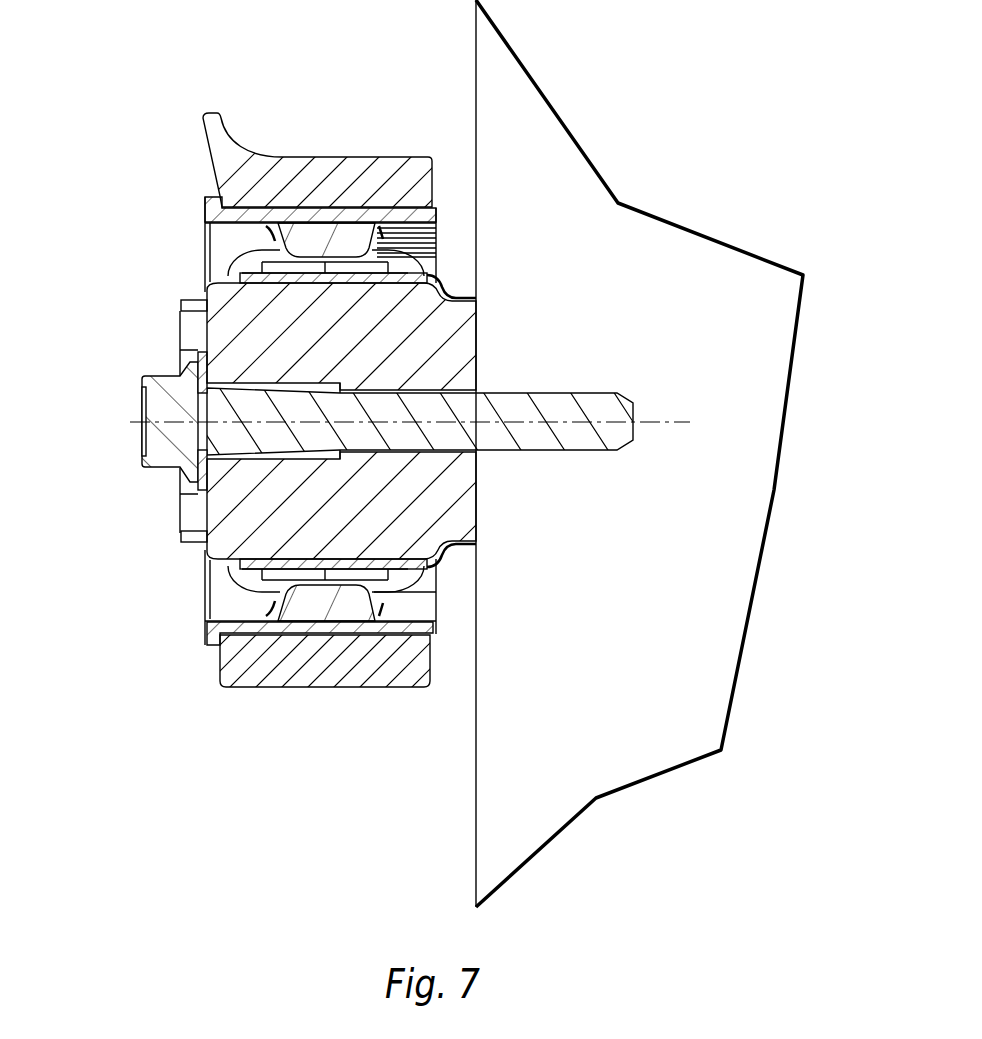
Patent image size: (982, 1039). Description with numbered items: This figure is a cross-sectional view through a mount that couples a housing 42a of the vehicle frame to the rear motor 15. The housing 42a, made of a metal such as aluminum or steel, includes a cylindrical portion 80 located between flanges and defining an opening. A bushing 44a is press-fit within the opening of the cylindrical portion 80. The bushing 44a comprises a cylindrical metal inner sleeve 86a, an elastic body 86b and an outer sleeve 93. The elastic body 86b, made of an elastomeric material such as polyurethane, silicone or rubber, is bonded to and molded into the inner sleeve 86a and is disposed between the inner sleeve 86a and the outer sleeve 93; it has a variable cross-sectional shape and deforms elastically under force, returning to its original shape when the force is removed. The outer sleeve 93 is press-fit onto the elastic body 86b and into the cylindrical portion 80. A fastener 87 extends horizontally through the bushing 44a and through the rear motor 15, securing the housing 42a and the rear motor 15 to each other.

The rear motor 15 is at (566, 760).
The housing 42a is at (274, 150).
The bushing 44a is at (186, 545).
The cylindrical portion 80 is at (397, 665).
The inner sleeve 86a is at (287, 497).
The elastic body 86b is at (330, 600).
The fastener 87 is at (186, 426).
The outer sleeve 93 is at (302, 625).